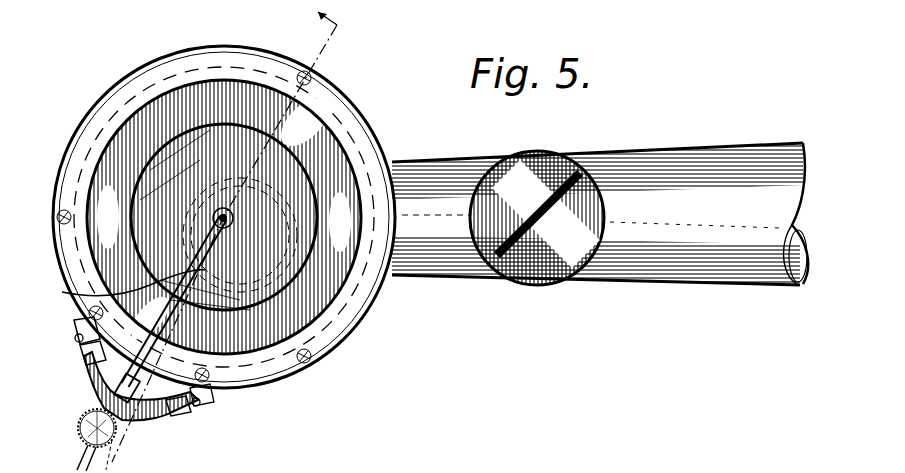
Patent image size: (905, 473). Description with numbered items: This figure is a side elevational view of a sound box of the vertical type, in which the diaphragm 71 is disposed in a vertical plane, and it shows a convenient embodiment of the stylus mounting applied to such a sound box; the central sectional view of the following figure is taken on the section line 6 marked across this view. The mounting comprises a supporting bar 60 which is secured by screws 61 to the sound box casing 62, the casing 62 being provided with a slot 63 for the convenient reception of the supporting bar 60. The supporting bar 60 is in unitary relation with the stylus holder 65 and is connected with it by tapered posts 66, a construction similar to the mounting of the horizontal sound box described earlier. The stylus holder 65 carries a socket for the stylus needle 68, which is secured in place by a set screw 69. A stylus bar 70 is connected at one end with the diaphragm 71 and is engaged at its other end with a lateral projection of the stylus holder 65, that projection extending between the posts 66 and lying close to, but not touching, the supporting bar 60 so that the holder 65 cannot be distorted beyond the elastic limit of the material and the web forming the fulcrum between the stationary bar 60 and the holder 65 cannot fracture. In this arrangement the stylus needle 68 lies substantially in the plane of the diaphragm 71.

The section line 6— 6 is at (235, 231).
The supporting bar 60 is at (76, 326).
The screws 61 is at (75, 338).
The sound box casing 62 is at (358, 336).
The slot 63 is at (248, 381).
The stylus holder 65 is at (106, 396).
The tapered posts 66 is at (82, 352).
The stylus needle 68 is at (80, 462).
The set screw 69 is at (78, 428).
The stylus bar 70 is at (62, 292).
The diaphragm 71 is at (206, 262).